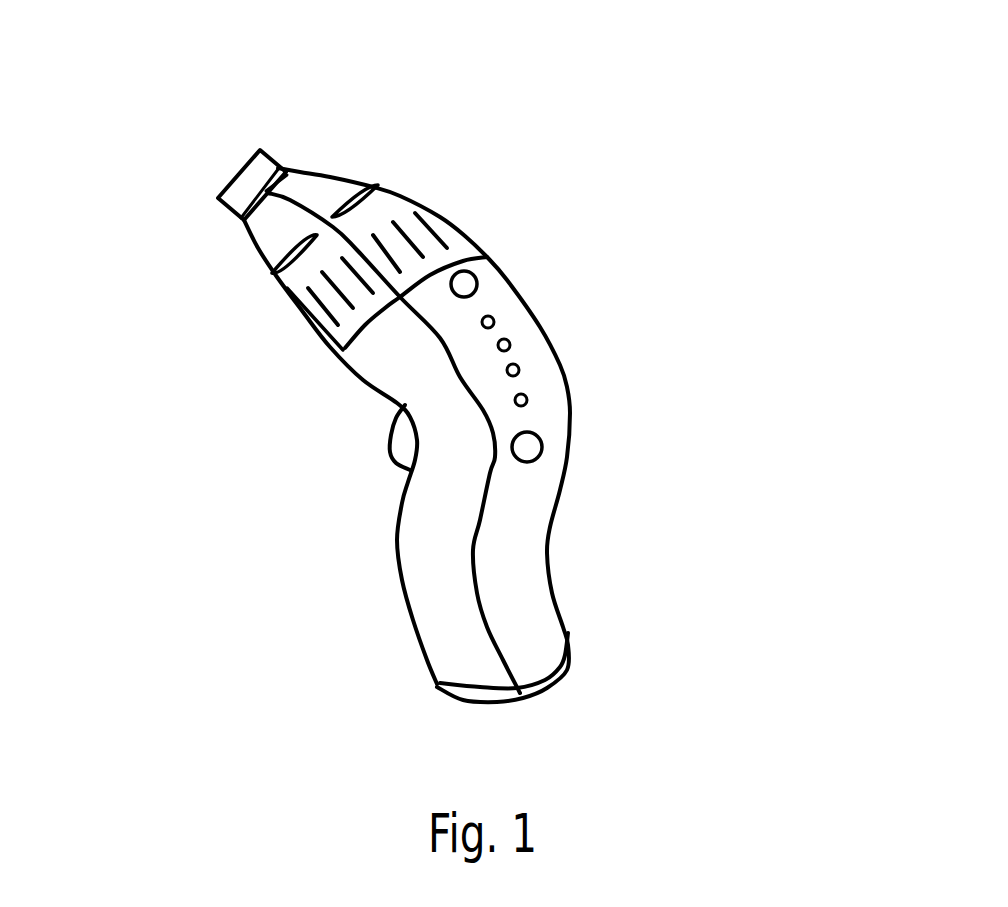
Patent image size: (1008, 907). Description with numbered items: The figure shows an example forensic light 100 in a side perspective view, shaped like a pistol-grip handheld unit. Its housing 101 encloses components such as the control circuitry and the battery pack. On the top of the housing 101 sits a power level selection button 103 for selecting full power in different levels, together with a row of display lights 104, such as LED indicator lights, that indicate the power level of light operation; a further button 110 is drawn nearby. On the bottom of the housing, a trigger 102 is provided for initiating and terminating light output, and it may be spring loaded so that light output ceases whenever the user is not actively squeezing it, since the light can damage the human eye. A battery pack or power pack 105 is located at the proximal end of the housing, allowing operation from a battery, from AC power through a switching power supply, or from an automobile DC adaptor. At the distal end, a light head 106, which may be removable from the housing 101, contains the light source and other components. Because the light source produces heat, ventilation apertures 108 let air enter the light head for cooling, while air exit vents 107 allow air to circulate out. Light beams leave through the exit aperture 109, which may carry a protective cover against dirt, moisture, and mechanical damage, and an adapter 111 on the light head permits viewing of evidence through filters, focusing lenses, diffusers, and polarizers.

The forensic light 100 is at (748, 307).
The housing 101 is at (505, 290).
The trigger 102 is at (391, 442).
The power level selection button 103 is at (529, 448).
The indicator lights 104 is at (494, 322).
The battery pack or power pack 105 is at (567, 668).
The light head 106 is at (380, 217).
The air exit vents 107 is at (283, 253).
The ventilation apertures 108 is at (432, 228).
The exit aperture 109 is at (212, 175).
The button 110 is at (473, 273).
The adapter 111 is at (278, 168).